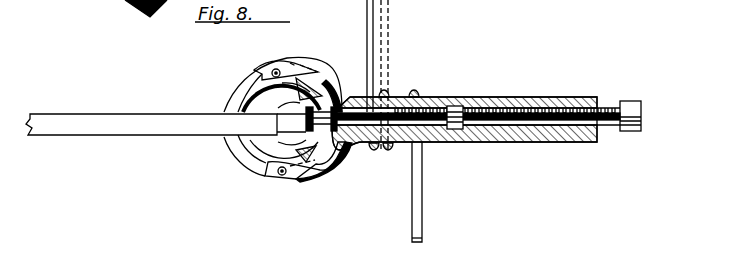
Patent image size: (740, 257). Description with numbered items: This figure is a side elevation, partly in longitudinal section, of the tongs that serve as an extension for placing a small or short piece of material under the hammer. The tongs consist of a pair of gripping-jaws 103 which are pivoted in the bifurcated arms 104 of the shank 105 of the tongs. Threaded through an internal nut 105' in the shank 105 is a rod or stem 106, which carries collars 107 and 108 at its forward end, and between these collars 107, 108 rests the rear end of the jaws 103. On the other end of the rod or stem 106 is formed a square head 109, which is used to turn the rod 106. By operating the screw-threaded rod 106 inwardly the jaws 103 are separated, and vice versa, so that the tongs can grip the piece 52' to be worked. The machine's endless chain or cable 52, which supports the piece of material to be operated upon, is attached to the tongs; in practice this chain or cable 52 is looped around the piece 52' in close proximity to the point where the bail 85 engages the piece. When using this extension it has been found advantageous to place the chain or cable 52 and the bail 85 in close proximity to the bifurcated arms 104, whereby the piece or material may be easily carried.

The piece 52' is at (151, 139).
The endless chain or cable 52 is at (398, 98).
The bail 85 is at (422, 178).
The gripping-jaws 103 is at (241, 90).
The bifurcated arms 104 is at (271, 178).
The shank 105 is at (464, 133).
The internal nut 105' is at (486, 97).
The rod or stem 106 is at (553, 112).
The collar 107 is at (282, 95).
The collar 108 is at (284, 149).
The square head 109 is at (642, 118).